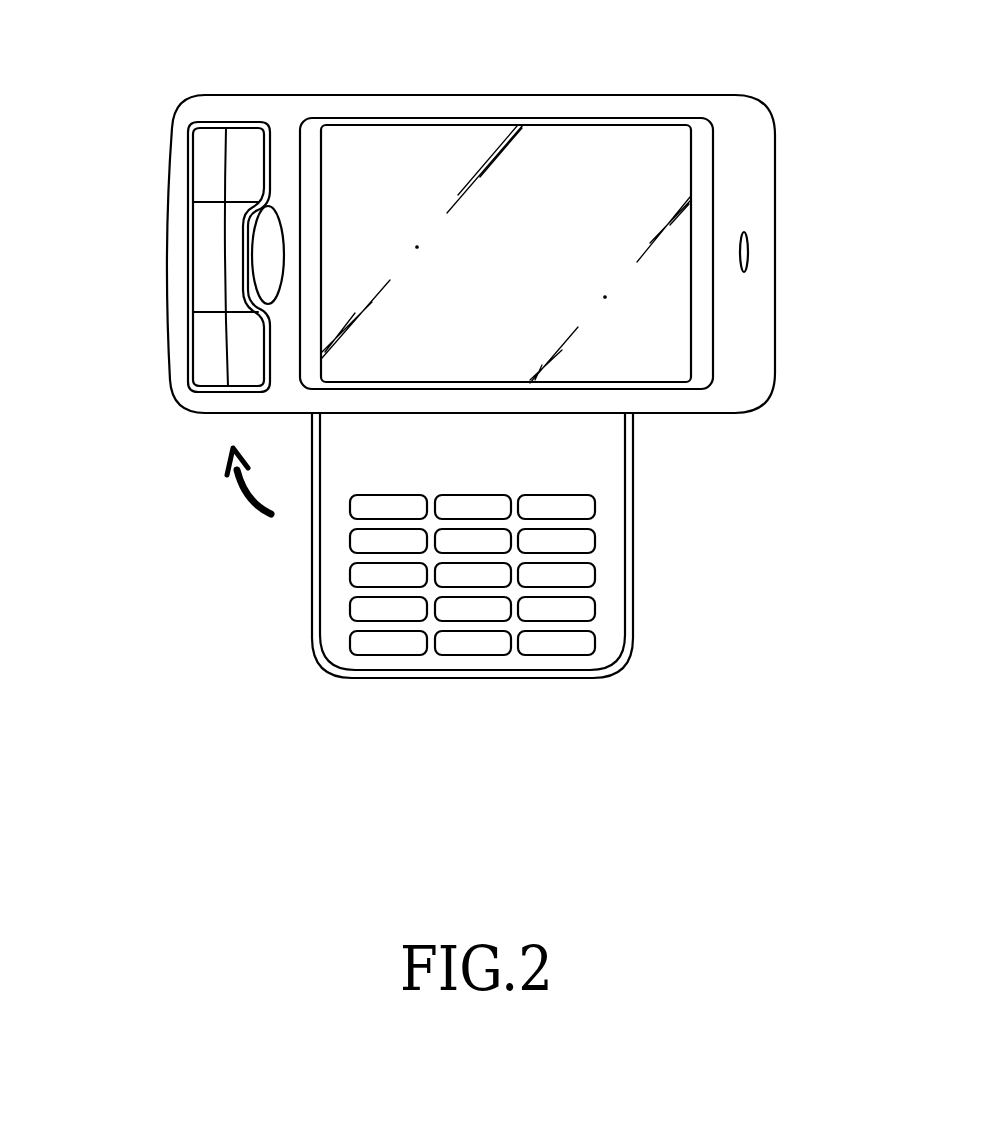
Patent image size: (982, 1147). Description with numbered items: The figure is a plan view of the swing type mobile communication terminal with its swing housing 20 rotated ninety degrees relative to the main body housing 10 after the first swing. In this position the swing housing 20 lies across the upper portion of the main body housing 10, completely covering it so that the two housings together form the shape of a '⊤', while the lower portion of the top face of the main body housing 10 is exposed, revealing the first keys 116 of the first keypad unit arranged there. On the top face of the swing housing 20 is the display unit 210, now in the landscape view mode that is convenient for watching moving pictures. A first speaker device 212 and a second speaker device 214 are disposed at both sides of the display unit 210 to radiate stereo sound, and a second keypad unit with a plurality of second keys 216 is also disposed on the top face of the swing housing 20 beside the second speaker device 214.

The swing housing 20 is at (575, 72).
The display unit 210 is at (387, 150).
The second keys 216 is at (207, 166).
The second speaker device 214 is at (268, 257).
The first speaker device 212 is at (748, 250).
The main body housing 10 is at (660, 552).
The first keys 116 is at (475, 645).